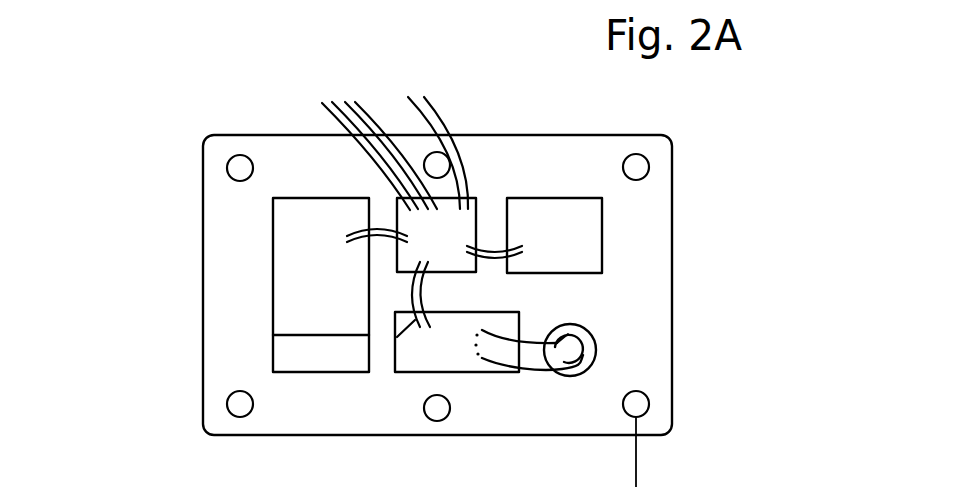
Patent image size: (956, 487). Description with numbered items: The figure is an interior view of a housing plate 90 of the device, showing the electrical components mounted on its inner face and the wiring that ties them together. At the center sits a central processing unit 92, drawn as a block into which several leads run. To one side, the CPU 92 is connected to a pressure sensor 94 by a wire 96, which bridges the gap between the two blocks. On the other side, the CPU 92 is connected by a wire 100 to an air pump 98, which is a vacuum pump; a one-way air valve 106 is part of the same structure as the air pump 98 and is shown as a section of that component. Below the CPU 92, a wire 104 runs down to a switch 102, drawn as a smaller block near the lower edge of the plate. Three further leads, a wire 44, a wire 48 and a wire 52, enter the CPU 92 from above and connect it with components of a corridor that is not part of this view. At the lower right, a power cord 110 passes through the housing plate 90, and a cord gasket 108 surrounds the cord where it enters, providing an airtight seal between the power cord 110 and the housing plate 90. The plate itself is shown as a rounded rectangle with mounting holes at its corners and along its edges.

The housing plate 90 is at (292, 153).
The wire 44 is at (332, 102).
The wire 48 is at (377, 135).
The wire 52 is at (424, 97).
The central processing unit 92 is at (436, 147).
The pressure sensor 94 is at (588, 210).
The wire 96 is at (651, 261).
The air pump 98 is at (293, 279).
The wire 100 is at (217, 219).
The switch 102 is at (457, 362).
The wire 104 is at (402, 372).
The one-way air valve 106 is at (292, 352).
The cord gasket 108 is at (577, 372).
The power cord 110 is at (596, 348).